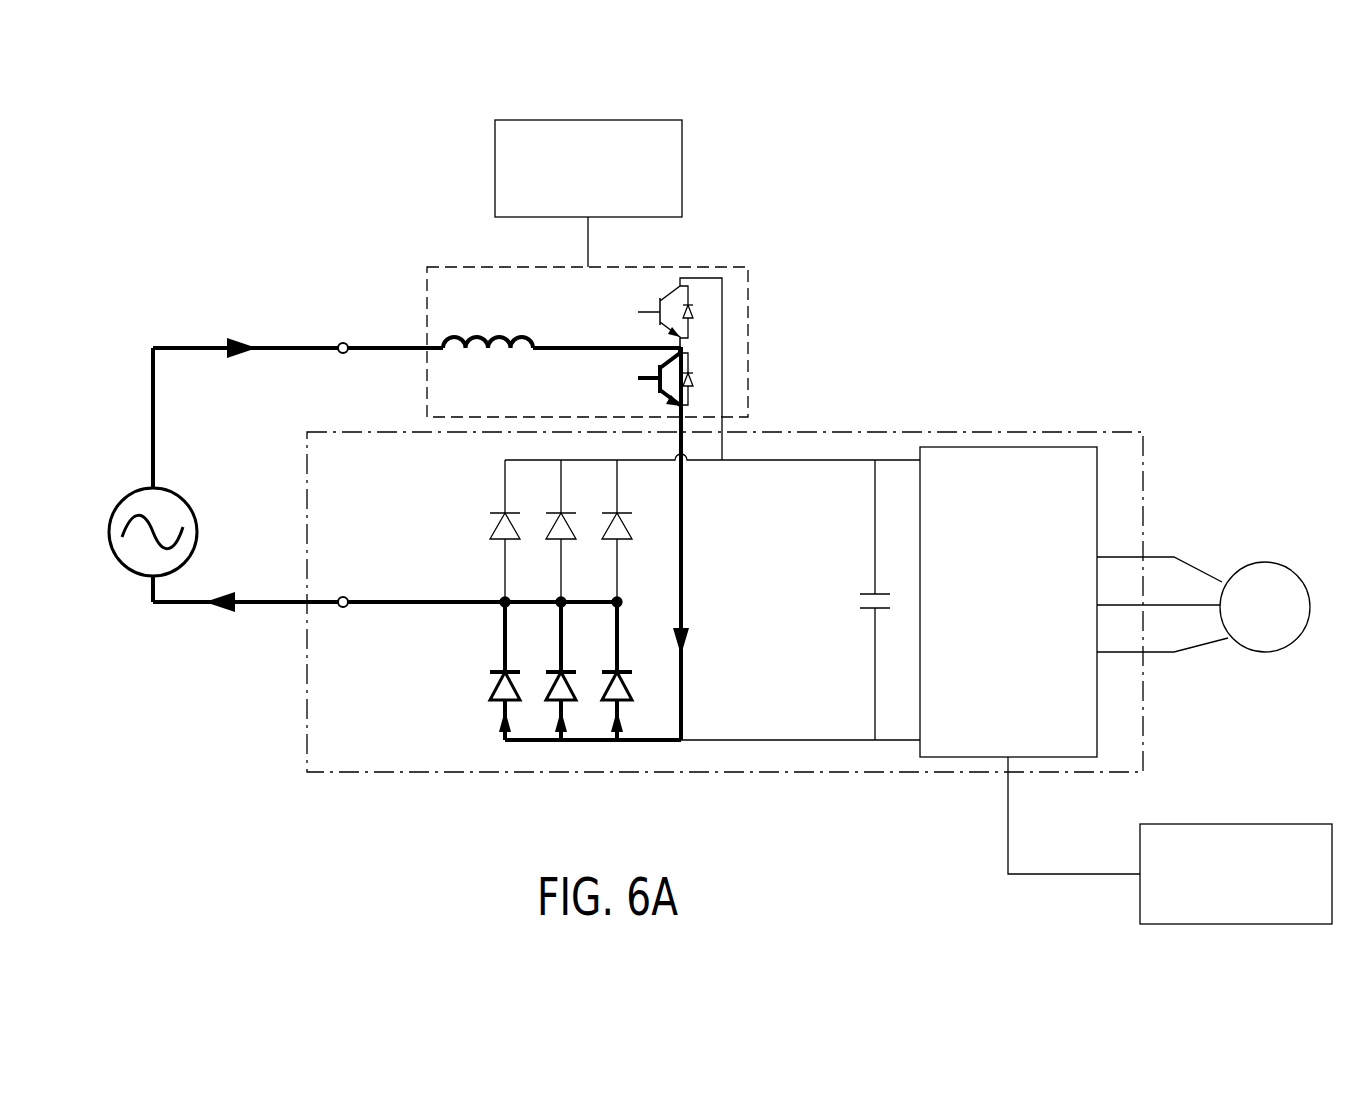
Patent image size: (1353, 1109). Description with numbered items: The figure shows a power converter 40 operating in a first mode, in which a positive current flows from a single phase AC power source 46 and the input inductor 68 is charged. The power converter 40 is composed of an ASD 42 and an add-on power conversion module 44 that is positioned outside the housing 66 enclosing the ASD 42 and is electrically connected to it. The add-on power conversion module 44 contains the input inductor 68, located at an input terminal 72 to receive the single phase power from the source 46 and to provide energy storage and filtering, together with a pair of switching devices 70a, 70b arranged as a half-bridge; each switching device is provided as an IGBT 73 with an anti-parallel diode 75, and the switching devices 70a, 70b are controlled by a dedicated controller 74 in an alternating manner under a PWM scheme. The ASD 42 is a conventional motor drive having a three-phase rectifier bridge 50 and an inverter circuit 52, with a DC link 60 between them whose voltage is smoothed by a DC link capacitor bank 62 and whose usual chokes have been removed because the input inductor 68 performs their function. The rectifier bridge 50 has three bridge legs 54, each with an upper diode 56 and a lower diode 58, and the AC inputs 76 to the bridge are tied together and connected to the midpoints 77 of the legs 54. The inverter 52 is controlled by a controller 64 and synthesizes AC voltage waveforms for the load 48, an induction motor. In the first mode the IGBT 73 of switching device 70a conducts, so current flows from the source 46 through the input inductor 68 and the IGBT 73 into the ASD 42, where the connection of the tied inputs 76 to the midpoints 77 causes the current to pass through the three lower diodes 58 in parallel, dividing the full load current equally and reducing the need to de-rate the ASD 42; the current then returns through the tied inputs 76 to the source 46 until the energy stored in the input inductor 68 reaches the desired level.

The power converter 40 is at (1003, 225).
The ASD 42 is at (975, 412).
The add-on power conversion module 44 is at (680, 248).
The single phase AC power source 46 is at (120, 565).
The load 48 is at (1264, 654).
The three-phase rectifier bridge 50 is at (467, 722).
The inverter circuit 52 is at (962, 758).
The bridge legs 54 is at (617, 652).
The upper diode 56 is at (500, 528).
The lower diode 58 is at (493, 685).
The DC link 60 is at (805, 462).
The DC link capacitor bank 62 is at (868, 610).
The controller 64 is at (1238, 824).
The housing 66 is at (1146, 488).
The input inductor 68 is at (502, 334).
The switching device 70a is at (702, 358).
The switching device 70b is at (698, 297).
The input terminal 72 is at (398, 350).
The IGBT 73 is at (662, 300).
The dedicated controller 74 is at (588, 120).
The anti-parallel diode 75 is at (698, 310).
The AC inputs 76 is at (483, 597).
The midpoints 77 is at (567, 597).